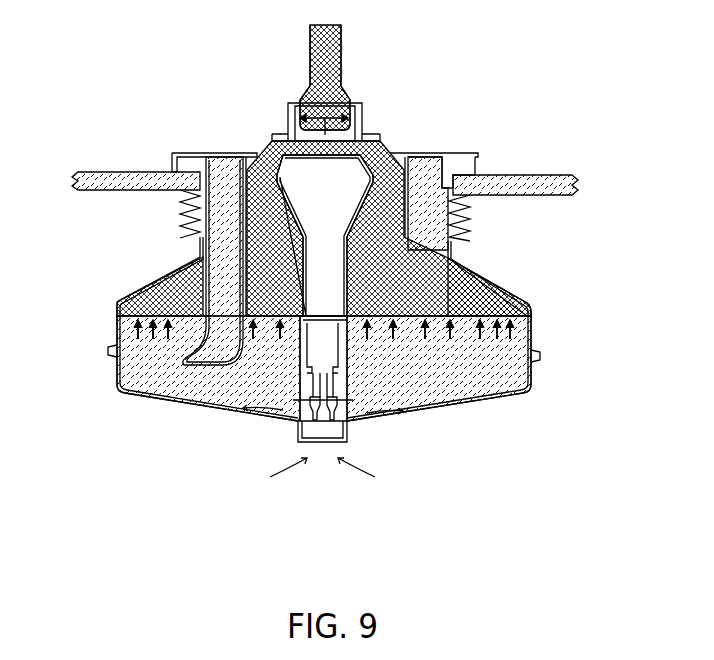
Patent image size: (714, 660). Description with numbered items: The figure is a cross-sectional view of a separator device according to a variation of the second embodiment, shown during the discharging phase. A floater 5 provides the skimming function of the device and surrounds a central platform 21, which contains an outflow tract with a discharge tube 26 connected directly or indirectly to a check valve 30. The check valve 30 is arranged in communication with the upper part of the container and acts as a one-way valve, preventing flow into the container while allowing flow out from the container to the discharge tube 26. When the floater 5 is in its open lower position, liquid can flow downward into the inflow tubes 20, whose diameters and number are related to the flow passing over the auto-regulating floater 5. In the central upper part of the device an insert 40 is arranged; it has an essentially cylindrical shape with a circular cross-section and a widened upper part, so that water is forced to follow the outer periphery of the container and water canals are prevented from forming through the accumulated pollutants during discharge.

The discharge tube 26 is at (330, 59).
The check valve 30 is at (313, 100).
The central platform 21 is at (203, 152).
The floater 5 is at (192, 167).
The inflow tubes 20 is at (215, 272).
The insert 40 is at (325, 235).